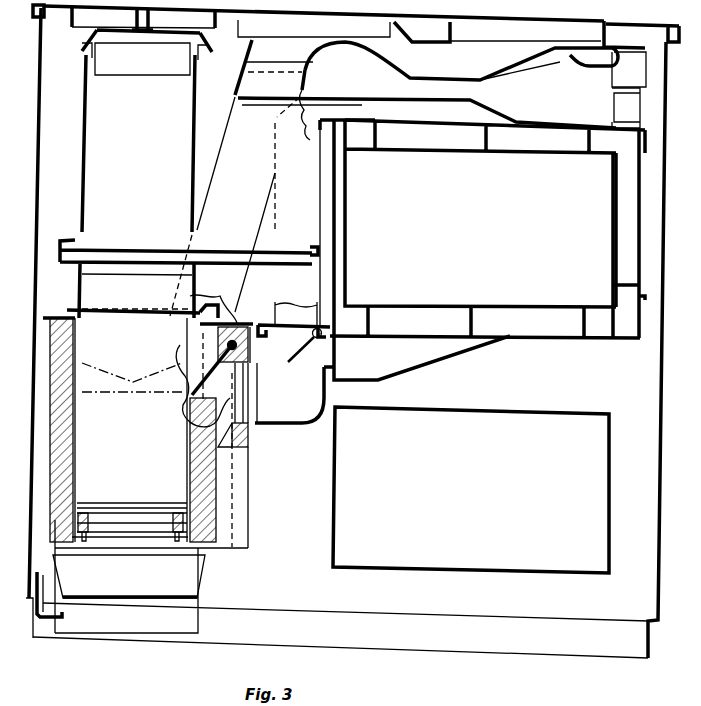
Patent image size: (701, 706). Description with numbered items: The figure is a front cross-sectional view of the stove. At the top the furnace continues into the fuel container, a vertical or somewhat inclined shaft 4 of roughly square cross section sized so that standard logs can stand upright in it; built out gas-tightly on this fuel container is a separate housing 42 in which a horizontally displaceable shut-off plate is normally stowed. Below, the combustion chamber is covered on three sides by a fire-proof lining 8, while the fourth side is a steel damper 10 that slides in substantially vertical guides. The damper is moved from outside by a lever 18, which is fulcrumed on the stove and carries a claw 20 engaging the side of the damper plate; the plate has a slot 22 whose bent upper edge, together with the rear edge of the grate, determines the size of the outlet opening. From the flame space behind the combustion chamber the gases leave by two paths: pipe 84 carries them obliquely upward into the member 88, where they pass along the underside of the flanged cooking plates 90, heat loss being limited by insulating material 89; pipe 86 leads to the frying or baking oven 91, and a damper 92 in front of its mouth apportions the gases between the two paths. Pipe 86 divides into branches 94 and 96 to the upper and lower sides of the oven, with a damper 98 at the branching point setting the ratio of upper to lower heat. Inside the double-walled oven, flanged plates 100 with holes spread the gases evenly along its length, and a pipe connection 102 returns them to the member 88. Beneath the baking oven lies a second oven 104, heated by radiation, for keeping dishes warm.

The shaft 4 is at (94, 148).
The fire-proof lining 8 is at (68, 414).
The damper 10 is at (106, 630).
The lever 18 is at (43, 569).
The claw 20 is at (52, 625).
The slot 22 is at (165, 500).
The housing 42 is at (287, 252).
The pipe 84 is at (228, 133).
The pipe 86 is at (288, 418).
The member 88 is at (398, 68).
The insulating material 89 is at (417, 30).
The flanged cooking plates 90 is at (328, 21).
The frying or baking oven 91 is at (607, 307).
The damper 92 is at (217, 371).
The branch 94 is at (342, 103).
The branch 96 is at (416, 362).
The damper 98 is at (316, 345).
The flanged plates 100 is at (586, 142).
The pipe connection 102 is at (619, 104).
The oven 104 is at (497, 421).